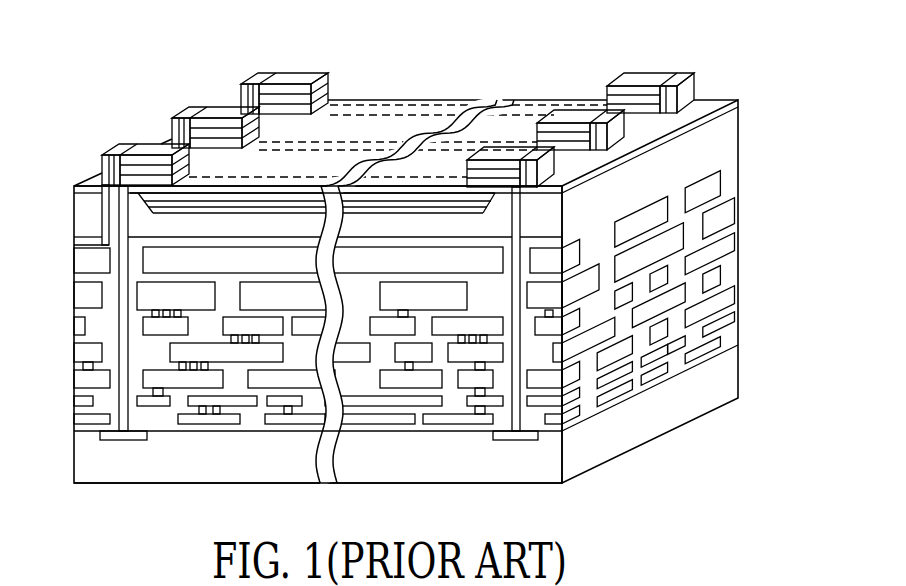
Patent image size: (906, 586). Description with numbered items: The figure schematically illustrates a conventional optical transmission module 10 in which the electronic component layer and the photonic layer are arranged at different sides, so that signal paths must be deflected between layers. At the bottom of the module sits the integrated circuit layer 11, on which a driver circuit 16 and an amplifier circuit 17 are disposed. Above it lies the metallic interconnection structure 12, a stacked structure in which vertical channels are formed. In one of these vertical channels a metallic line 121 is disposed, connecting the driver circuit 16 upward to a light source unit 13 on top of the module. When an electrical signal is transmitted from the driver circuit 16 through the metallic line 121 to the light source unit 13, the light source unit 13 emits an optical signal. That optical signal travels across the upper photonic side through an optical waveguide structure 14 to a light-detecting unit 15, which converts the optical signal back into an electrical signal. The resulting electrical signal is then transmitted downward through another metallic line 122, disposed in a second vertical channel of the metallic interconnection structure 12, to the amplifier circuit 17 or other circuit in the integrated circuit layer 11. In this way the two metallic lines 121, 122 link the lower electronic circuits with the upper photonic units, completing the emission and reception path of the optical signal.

The optical transmission module 10 is at (500, 45).
The integrated circuit layer 11 is at (87, 452).
The metallic interconnection structure 12 is at (68, 240).
The metallic line 121 is at (123, 232).
The metallic line 122 is at (516, 300).
The light source unit 13 is at (140, 165).
The optical waveguide structure 14 is at (255, 197).
The light-detecting unit 15 is at (488, 160).
The driver circuit 16 is at (128, 434).
The amplifier circuit 17 is at (527, 434).